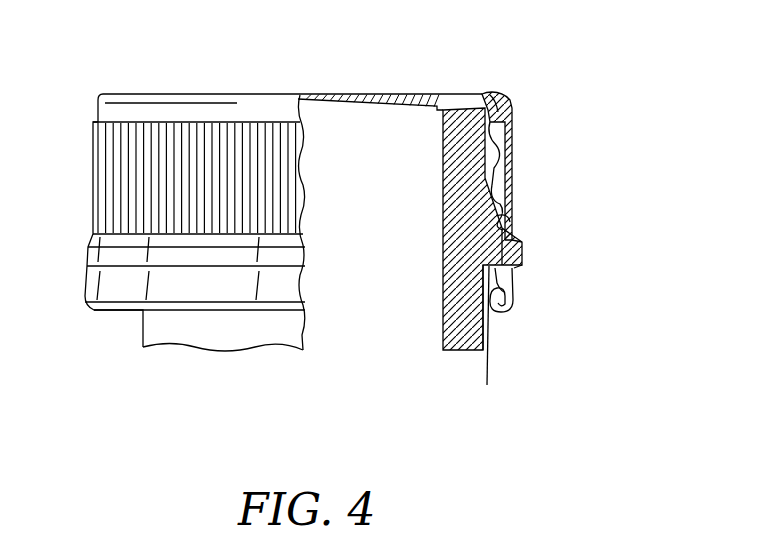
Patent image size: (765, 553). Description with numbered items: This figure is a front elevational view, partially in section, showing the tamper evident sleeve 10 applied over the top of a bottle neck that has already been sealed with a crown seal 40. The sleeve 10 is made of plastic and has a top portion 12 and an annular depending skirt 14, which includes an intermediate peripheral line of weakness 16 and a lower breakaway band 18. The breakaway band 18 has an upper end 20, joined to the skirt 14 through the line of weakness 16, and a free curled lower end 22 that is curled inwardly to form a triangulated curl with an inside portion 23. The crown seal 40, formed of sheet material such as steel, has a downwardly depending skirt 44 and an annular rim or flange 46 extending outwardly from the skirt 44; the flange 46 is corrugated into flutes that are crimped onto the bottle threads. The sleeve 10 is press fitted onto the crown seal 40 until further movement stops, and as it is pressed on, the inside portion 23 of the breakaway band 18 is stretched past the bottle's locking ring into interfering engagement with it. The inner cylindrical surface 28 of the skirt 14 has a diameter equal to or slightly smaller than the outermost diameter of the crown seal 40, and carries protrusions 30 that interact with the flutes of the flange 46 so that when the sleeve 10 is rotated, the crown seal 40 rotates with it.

The tamper evident sleeve 10 is at (265, 80).
The top portion 12 is at (508, 98).
The annular depending skirt 14 is at (527, 178).
The peripheral line of weakness 16 is at (547, 262).
The lower breakaway band 18 is at (515, 296).
The upper end 20 is at (515, 283).
The free curled lower end 22 is at (504, 320).
The inside portion 23 is at (486, 372).
The inner cylindrical surface 28 is at (506, 221).
The protrusions 30 is at (520, 200).
The crown seal 40 is at (458, 104).
The downwardly depending skirt 44 is at (513, 106).
The annular rim or flange 46 is at (516, 150).